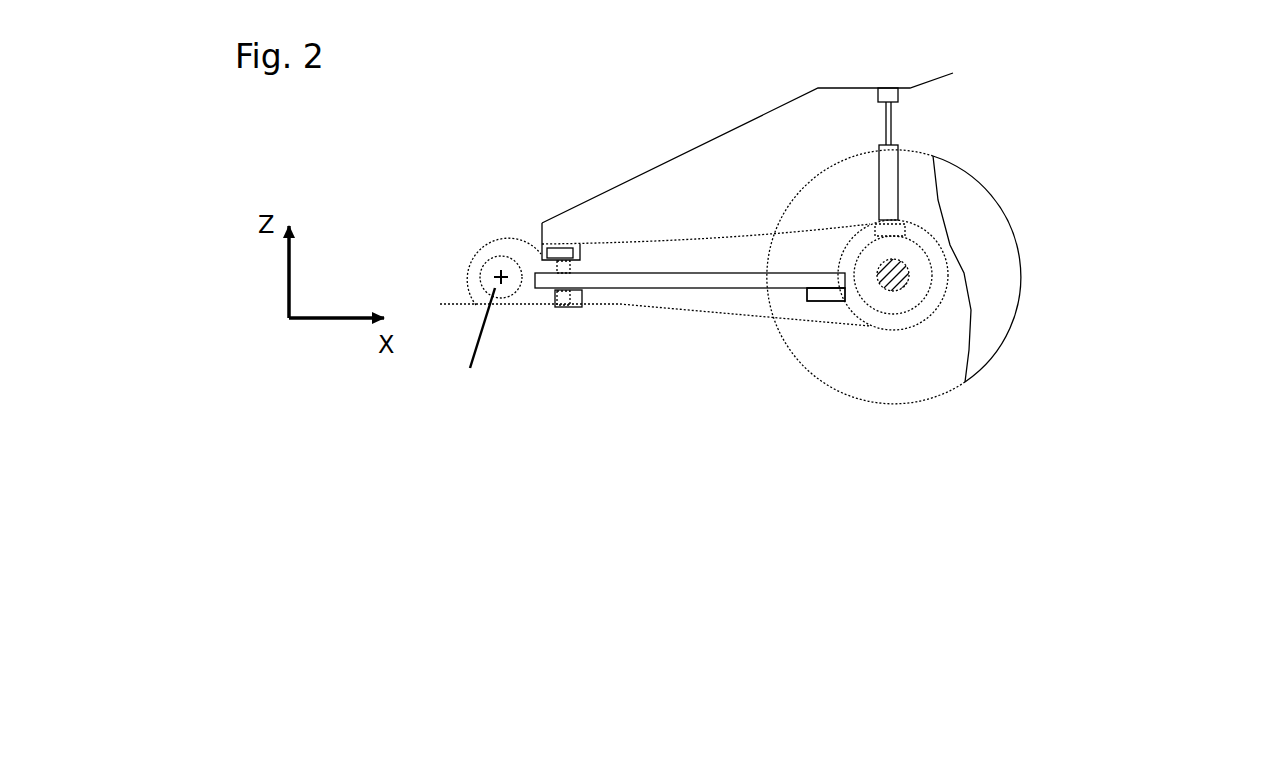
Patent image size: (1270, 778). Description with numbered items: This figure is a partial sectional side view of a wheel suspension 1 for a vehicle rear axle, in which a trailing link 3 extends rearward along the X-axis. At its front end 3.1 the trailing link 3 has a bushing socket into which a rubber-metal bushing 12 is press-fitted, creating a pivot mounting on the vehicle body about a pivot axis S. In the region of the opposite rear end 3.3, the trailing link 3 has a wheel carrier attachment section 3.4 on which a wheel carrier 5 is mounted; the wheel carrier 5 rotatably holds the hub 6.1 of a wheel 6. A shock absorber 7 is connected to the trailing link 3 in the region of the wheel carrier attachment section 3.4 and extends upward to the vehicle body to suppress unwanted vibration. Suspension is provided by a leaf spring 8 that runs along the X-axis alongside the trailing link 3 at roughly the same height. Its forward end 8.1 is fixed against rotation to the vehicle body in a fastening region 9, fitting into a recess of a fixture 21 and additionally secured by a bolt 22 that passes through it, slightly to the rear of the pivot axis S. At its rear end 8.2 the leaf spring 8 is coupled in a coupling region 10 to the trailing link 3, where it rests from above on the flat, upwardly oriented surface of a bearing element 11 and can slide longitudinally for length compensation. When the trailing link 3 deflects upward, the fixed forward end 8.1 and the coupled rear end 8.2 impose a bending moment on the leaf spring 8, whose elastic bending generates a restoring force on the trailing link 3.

The wheel suspension 1 is at (1154, 136).
The trailing link 3 is at (738, 266).
The front end 3.1 is at (503, 234).
The rear end 3.3 is at (922, 333).
The wheel carrier attachment section 3.4 is at (877, 322).
The wheel carrier 5 is at (927, 293).
The wheel 6 is at (993, 251).
The hub 6.1 is at (880, 267).
The shock absorber 7 is at (878, 177).
The leaf spring 8 is at (685, 287).
The forward end 8.1 is at (541, 347).
The rear end 8.2 is at (769, 368).
The fastening region 9 is at (547, 300).
The coupling region 10 is at (802, 299).
The bearing element 11 is at (823, 301).
The rubber-metal bushing 12 is at (471, 347).
The fixture 21 is at (608, 146).
The bolt 22 is at (576, 252).
The pivot axis S is at (499, 275).